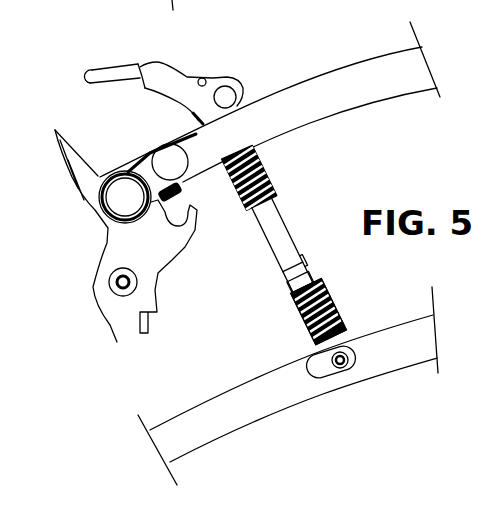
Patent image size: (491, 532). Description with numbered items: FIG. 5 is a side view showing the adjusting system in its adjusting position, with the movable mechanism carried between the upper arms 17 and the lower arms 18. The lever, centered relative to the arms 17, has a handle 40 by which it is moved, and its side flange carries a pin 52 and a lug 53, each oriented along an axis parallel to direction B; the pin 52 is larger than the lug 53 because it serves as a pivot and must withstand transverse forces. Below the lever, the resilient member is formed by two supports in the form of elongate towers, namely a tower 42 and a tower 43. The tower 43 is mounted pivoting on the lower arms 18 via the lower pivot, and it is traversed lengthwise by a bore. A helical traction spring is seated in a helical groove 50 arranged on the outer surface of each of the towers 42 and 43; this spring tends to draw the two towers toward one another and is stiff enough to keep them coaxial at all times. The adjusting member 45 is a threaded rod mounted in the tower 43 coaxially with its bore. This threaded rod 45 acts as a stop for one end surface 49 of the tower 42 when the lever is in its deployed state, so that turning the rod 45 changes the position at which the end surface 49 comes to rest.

The arms 17 is at (345, 98).
The lower arms 18 is at (413, 356).
The handle 40 is at (99, 72).
The support (tower) 42 is at (270, 213).
The support (tower) 43 is at (348, 323).
The adjusting member 45 is at (290, 285).
The end surface 49 is at (300, 267).
The helical groove 50 is at (251, 201).
The pin 52 is at (227, 86).
The lug 53 is at (201, 77).